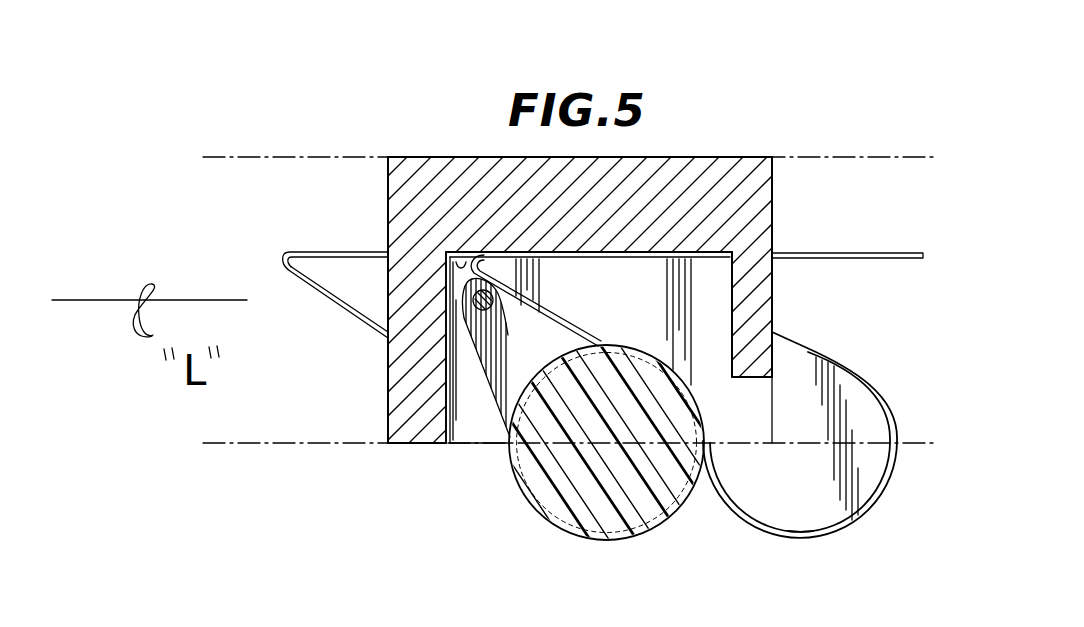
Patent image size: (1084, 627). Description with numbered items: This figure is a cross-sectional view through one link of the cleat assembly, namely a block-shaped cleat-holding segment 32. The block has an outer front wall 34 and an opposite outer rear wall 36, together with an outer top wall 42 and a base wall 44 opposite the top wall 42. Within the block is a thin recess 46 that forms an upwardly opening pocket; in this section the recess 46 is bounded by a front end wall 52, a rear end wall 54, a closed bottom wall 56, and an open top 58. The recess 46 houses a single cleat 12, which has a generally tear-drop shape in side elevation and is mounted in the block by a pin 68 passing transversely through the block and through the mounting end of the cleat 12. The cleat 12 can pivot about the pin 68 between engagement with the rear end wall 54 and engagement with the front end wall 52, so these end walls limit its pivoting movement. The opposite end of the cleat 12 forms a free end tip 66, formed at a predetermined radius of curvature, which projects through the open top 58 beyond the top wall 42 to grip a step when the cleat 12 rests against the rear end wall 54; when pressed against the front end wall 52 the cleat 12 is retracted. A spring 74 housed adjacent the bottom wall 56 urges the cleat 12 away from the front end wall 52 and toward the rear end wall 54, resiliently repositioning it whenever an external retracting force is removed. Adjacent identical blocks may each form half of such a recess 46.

The cleat 12 is at (800, 531).
The cleat-holding segment 32 is at (758, 172).
The front wall 34 is at (775, 204).
The rear wall 36 is at (388, 393).
The top wall 42 is at (407, 446).
The base wall 44 is at (670, 157).
The recess 46 is at (477, 430).
The front end wall 52 is at (733, 345).
The rear end wall 54 is at (452, 448).
The bottom wall 56 is at (459, 263).
The open top 58 is at (495, 462).
The free end tip 66 is at (604, 536).
The pin 68 is at (491, 307).
The spring 74 is at (316, 300).